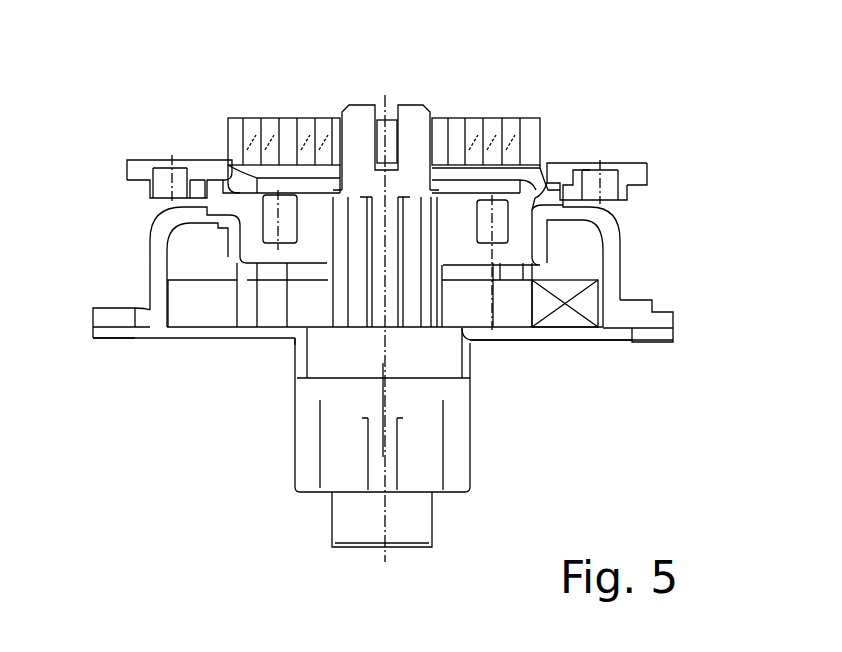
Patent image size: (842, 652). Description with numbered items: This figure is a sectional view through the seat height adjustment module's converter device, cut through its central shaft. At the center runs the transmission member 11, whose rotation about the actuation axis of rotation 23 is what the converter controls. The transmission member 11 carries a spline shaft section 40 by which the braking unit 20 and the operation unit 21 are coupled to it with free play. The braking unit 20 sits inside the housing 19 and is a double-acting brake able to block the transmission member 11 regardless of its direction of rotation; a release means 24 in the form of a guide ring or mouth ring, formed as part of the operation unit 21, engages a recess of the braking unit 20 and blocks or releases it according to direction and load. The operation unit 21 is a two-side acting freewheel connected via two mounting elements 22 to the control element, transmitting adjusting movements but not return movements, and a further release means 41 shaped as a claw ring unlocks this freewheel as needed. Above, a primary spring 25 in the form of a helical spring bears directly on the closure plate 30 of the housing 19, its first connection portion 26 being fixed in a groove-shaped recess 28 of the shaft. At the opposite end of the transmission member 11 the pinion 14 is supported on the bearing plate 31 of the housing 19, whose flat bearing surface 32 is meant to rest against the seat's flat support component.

The transmission member 11 is at (347, 550).
The pinion 14 is at (292, 437).
The housing 19 is at (157, 238).
The braking unit 20 is at (550, 299).
The operation unit 21 is at (561, 161).
The mounting elements 22 is at (630, 170).
The actuation axis of rotation 23 is at (383, 390).
The release means 24 is at (346, 280).
The primary spring 25 is at (275, 116).
The first connection portion 26 is at (383, 147).
The groove-shaped recess 28 is at (399, 96).
The closure plate 30 is at (477, 173).
The bearing plate 31 is at (601, 339).
The flat bearing surface 32 is at (543, 343).
The spline shaft section 40 is at (283, 270).
The release means of the actuator unit 41 is at (283, 187).